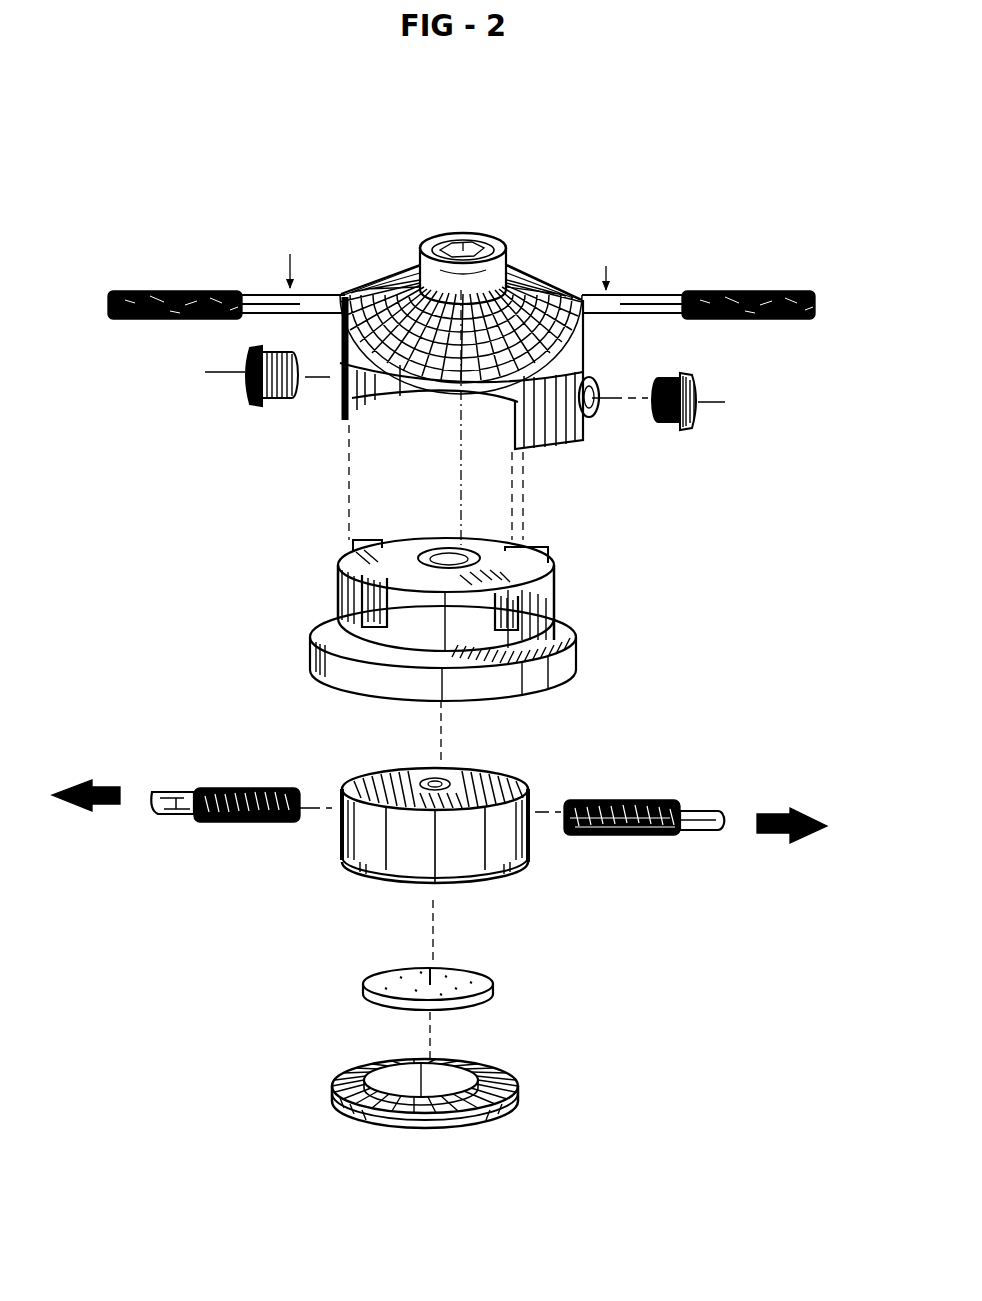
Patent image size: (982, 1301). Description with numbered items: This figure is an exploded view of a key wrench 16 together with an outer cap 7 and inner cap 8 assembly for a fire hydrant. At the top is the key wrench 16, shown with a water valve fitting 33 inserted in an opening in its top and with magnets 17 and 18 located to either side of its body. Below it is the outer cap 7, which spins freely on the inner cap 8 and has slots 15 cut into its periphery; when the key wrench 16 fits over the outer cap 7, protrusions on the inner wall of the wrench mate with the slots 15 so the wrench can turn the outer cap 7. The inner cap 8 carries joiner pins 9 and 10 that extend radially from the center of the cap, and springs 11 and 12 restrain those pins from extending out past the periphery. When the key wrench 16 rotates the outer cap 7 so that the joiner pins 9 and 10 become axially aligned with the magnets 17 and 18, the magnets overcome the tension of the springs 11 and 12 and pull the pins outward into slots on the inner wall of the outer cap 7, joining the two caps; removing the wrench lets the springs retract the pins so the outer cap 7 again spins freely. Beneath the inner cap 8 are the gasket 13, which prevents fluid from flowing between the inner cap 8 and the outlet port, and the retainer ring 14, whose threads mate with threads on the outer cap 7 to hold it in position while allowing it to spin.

The key wrench 16 is at (461, 351).
The water valve fitting 33 is at (512, 243).
The magnet 18 is at (267, 388).
The magnet 17 is at (658, 417).
The outer cap 7 is at (568, 581).
The slots 15 is at (508, 616).
The inner cap 8 is at (332, 851).
The joiner pin 9 is at (190, 755).
The spring 11 is at (286, 785).
The spring 12 is at (653, 797).
The joiner pin 10 is at (706, 808).
The gasket 13 is at (358, 998).
The retainer ring 14 is at (328, 1093).